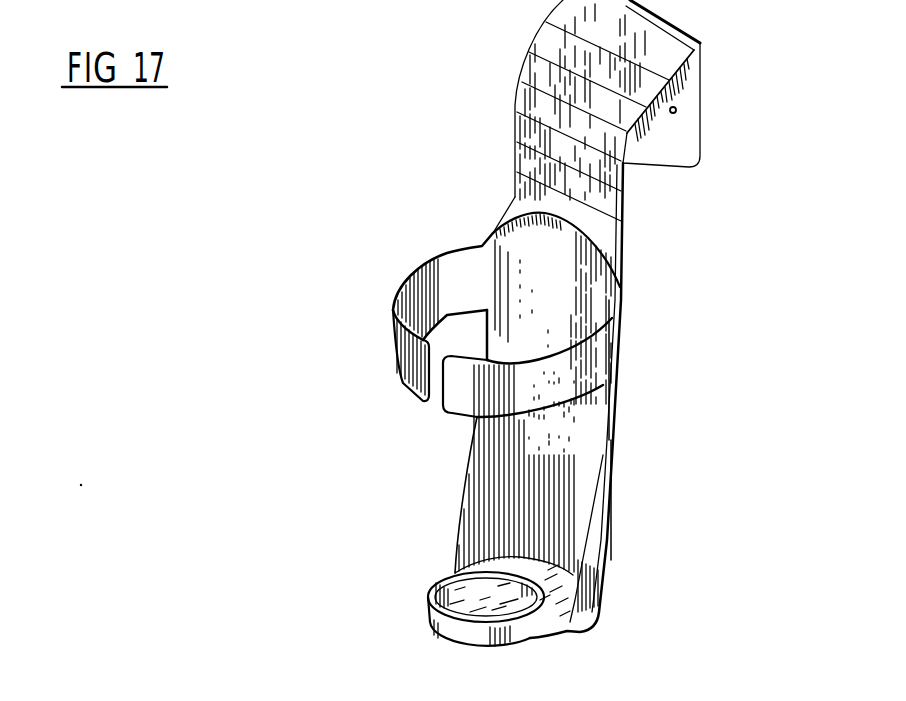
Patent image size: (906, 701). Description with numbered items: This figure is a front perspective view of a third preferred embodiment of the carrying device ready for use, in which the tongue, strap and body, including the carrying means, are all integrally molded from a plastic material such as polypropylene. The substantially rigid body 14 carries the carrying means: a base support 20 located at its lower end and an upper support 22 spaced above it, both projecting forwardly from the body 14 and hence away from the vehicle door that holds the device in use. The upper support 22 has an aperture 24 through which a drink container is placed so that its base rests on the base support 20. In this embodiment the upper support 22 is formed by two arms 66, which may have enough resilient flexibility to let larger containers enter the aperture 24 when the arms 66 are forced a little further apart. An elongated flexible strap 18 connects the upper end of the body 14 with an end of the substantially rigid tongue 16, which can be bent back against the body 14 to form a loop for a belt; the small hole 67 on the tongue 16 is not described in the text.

The body 14 is at (613, 430).
The tongue 16 is at (702, 100).
The strap 18 is at (528, 52).
The base support 20 is at (428, 627).
The upper support 22 is at (427, 335).
The aperture 24 is at (467, 333).
The arms 66 is at (417, 395).
The hole 67 is at (676, 113).